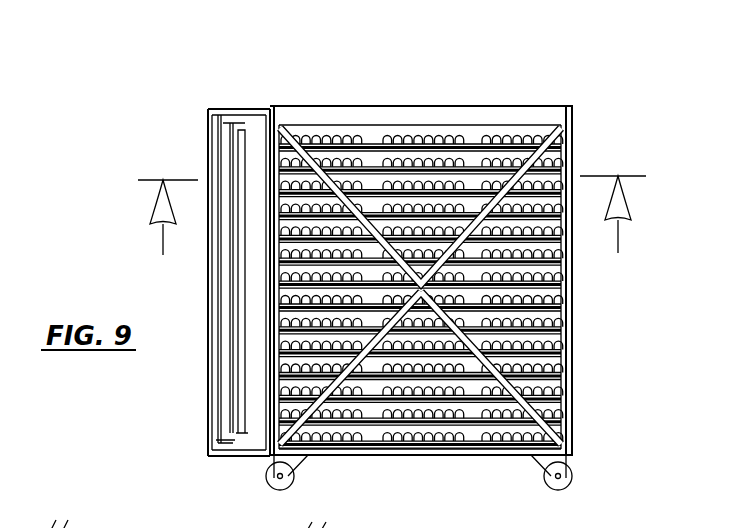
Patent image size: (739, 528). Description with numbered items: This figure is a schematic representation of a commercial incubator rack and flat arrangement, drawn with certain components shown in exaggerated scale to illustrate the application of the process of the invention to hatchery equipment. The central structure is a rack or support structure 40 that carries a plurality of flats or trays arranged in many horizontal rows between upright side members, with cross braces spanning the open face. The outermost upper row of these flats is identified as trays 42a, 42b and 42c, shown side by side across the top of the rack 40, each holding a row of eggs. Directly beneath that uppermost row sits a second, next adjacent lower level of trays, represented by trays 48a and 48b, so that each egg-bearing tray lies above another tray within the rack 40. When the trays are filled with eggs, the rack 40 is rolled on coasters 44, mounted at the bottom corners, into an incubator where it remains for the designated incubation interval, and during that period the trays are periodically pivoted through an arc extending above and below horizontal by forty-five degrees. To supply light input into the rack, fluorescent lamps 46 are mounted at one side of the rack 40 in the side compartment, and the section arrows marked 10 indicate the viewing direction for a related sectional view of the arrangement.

The rack 40 is at (431, 273).
The tray 42a is at (318, 123).
The tray 42b is at (418, 122).
The tray 42c is at (515, 120).
The tray 48a is at (347, 152).
The tray 48b is at (450, 150).
The coasters 44 is at (283, 477).
The fluorescent lamps 46 is at (228, 132).
The section line 10 is at (392, 203).